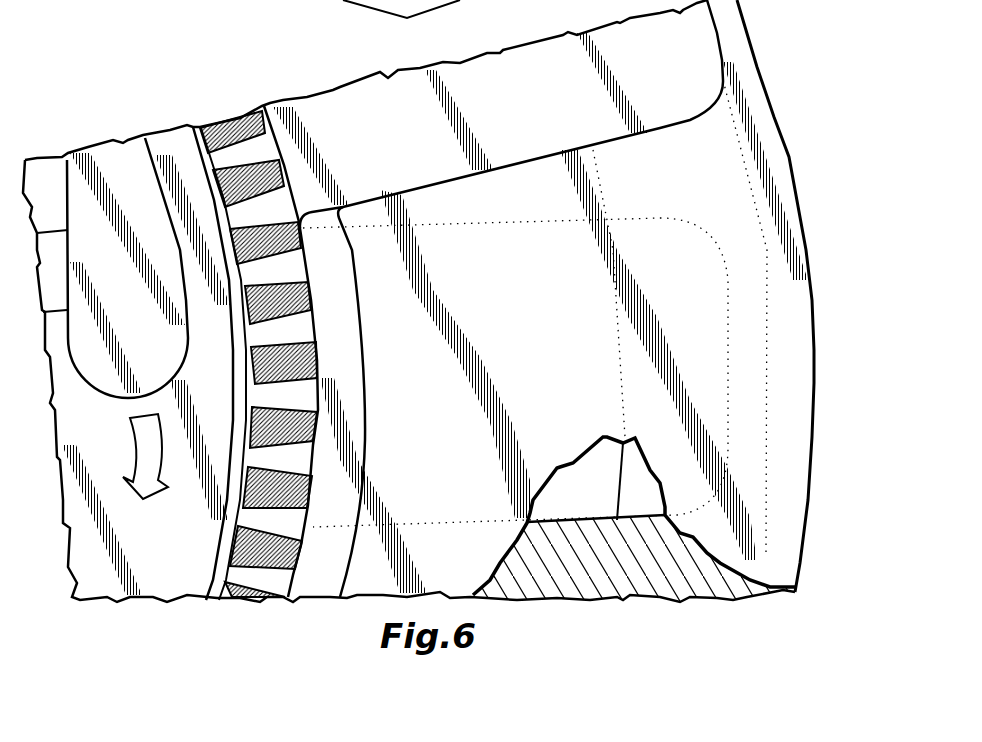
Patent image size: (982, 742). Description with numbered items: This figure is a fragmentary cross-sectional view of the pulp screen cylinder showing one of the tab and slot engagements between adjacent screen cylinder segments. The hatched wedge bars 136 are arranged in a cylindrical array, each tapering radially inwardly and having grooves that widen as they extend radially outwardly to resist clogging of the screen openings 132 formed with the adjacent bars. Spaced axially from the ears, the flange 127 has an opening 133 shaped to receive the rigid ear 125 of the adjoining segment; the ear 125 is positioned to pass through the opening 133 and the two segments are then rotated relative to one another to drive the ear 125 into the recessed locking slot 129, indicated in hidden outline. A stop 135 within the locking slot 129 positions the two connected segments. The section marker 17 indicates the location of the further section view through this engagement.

The section line indicator 17 is at (222, 385).
The rigid ear 125 is at (615, 501).
The flange 127 is at (789, 158).
The recessed locking slot 129 is at (768, 462).
The screen opening 132 is at (228, 572).
The opening 133 is at (720, 10).
The stop 135 is at (766, 552).
The wedge bar 136 is at (283, 163).